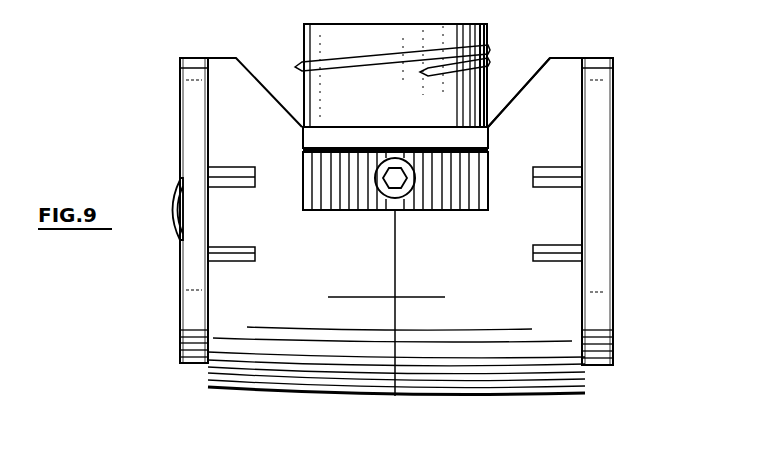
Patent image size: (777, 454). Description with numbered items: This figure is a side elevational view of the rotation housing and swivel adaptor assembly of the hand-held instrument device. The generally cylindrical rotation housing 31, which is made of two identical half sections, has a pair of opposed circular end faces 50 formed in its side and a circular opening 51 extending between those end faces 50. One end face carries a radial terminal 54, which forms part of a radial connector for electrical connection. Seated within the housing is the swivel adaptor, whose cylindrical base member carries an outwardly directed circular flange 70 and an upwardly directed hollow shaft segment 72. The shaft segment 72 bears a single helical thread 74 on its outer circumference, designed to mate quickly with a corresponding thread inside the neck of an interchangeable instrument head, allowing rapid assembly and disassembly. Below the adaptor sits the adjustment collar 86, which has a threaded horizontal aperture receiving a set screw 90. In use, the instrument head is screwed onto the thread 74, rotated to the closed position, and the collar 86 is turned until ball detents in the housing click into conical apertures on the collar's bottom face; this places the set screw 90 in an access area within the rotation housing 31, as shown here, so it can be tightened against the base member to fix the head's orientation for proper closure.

The rotation housing 31 is at (535, 240).
The circular end faces 50 is at (178, 110).
The circular opening 51 is at (537, 73).
The radial terminal 54 is at (167, 205).
The circular flange 70 is at (380, 137).
The hollow shaft segment 72 is at (486, 65).
The single helical thread 74 is at (296, 66).
The adjustment collar 86 is at (318, 182).
The set screw 90 is at (400, 180).